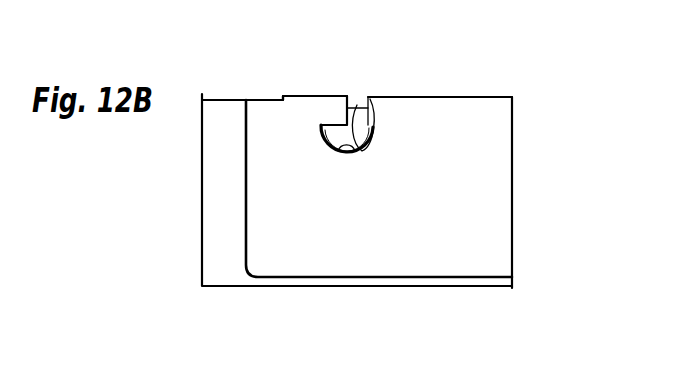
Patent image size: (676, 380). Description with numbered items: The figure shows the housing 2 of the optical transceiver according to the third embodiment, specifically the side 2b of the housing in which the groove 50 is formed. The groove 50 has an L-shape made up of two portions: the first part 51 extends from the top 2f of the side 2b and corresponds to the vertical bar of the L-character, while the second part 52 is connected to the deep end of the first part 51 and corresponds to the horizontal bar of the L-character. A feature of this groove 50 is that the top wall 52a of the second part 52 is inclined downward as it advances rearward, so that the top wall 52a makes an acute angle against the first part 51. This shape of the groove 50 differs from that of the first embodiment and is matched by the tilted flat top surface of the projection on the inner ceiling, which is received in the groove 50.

The housing 2 is at (463, 92).
The side 2b is at (497, 146).
The top 2f is at (307, 96).
The groove 50 is at (360, 93).
The first part 51 is at (368, 150).
The second part 52 is at (355, 151).
The top wall 52a is at (327, 151).